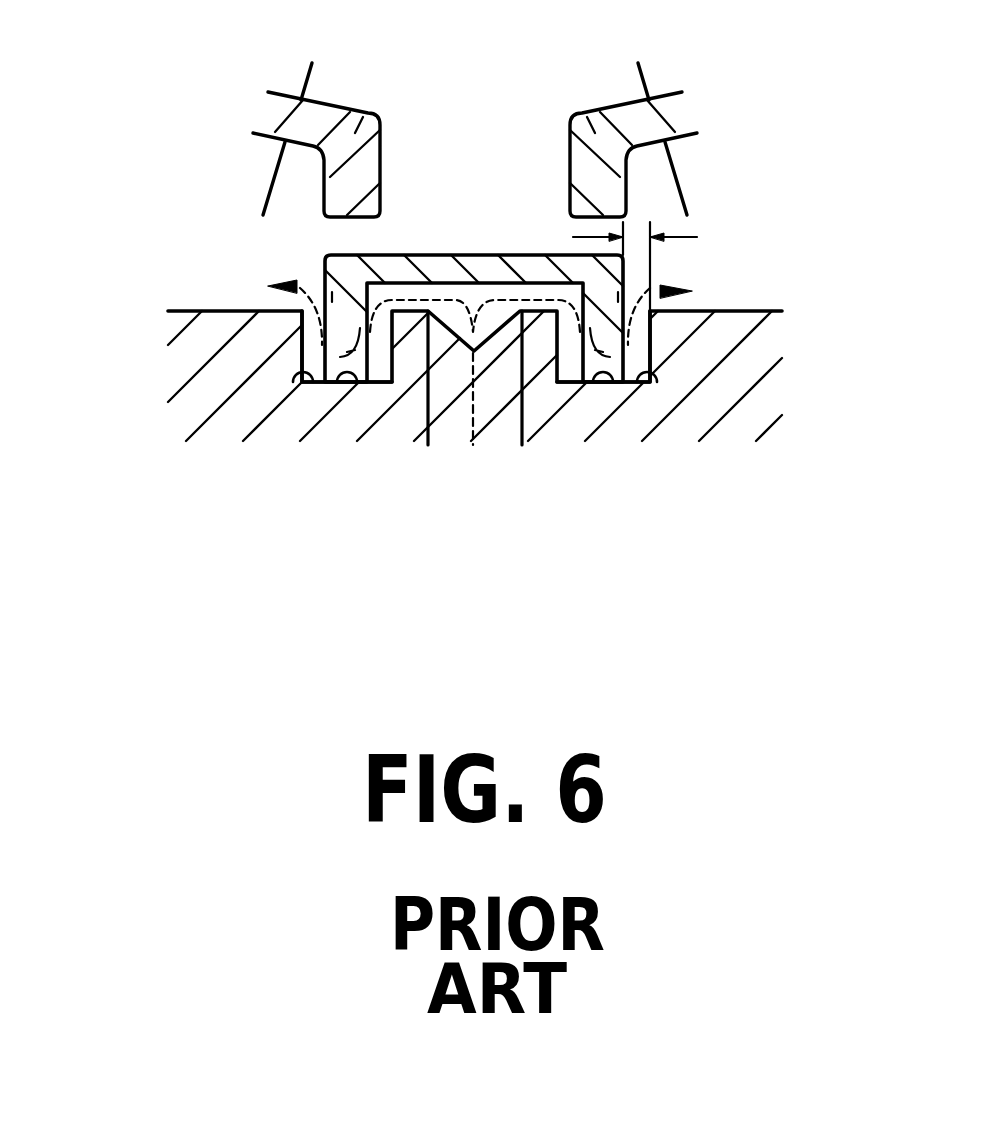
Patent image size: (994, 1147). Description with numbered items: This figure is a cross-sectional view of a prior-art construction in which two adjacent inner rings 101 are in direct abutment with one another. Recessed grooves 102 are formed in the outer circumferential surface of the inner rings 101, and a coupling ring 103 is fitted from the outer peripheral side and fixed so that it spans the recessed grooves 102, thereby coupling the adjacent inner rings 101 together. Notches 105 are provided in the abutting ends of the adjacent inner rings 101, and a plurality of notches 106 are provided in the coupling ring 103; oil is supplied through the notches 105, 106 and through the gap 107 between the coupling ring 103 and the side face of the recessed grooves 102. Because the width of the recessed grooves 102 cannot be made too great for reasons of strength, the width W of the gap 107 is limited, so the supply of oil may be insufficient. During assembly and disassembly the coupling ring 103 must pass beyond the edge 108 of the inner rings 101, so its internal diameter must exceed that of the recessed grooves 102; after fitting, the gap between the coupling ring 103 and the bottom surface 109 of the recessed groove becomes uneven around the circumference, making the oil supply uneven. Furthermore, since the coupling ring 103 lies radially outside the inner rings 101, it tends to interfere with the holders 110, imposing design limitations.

The inner ring 101 is at (223, 388).
The recessed groove 102 is at (303, 367).
The coupling ring 103 is at (497, 270).
The notch 105 is at (492, 420).
The notch 106 is at (307, 351).
The gap 107 is at (302, 333).
The edge 108 is at (425, 290).
The bottom surface 109 is at (337, 383).
The holder 110 is at (572, 116).
The width W is at (664, 259).